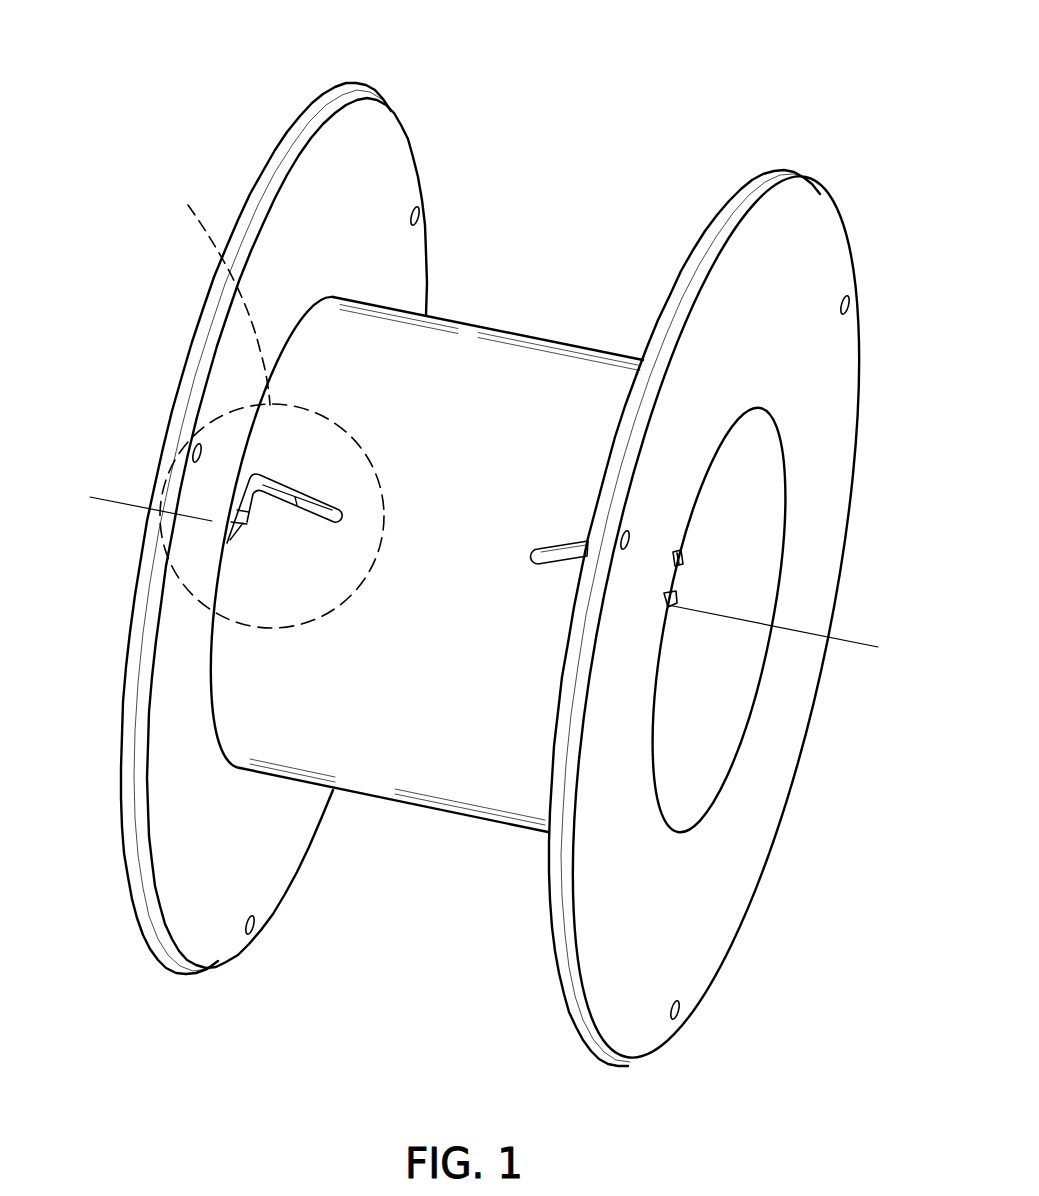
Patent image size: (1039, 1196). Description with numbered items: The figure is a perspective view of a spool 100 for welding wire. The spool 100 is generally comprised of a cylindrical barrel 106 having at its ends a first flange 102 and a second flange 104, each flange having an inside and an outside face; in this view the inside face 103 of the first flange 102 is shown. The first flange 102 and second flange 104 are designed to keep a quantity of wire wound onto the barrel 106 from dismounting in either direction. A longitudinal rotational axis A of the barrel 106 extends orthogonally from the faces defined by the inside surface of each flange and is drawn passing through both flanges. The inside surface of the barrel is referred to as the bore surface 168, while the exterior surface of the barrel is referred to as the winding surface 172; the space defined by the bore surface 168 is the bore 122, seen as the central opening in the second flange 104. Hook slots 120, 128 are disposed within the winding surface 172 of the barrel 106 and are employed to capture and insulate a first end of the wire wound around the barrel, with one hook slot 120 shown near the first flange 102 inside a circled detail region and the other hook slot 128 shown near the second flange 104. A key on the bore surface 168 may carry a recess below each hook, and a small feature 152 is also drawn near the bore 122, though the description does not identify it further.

The spool 100 is at (194, 136).
The first flange 102 is at (315, 113).
The inside face of the first flange 103 is at (392, 145).
The second flange 104 is at (798, 207).
The cylindrical barrel 106 is at (378, 754).
The hook slot 120 is at (267, 448).
The bore 122 is at (686, 803).
The hook slot 128 is at (542, 518).
The tab 152 is at (672, 580).
The bore surface 168 is at (728, 538).
The winding surface 172 is at (506, 337).
The longitudinal rotational axis A is at (852, 648).